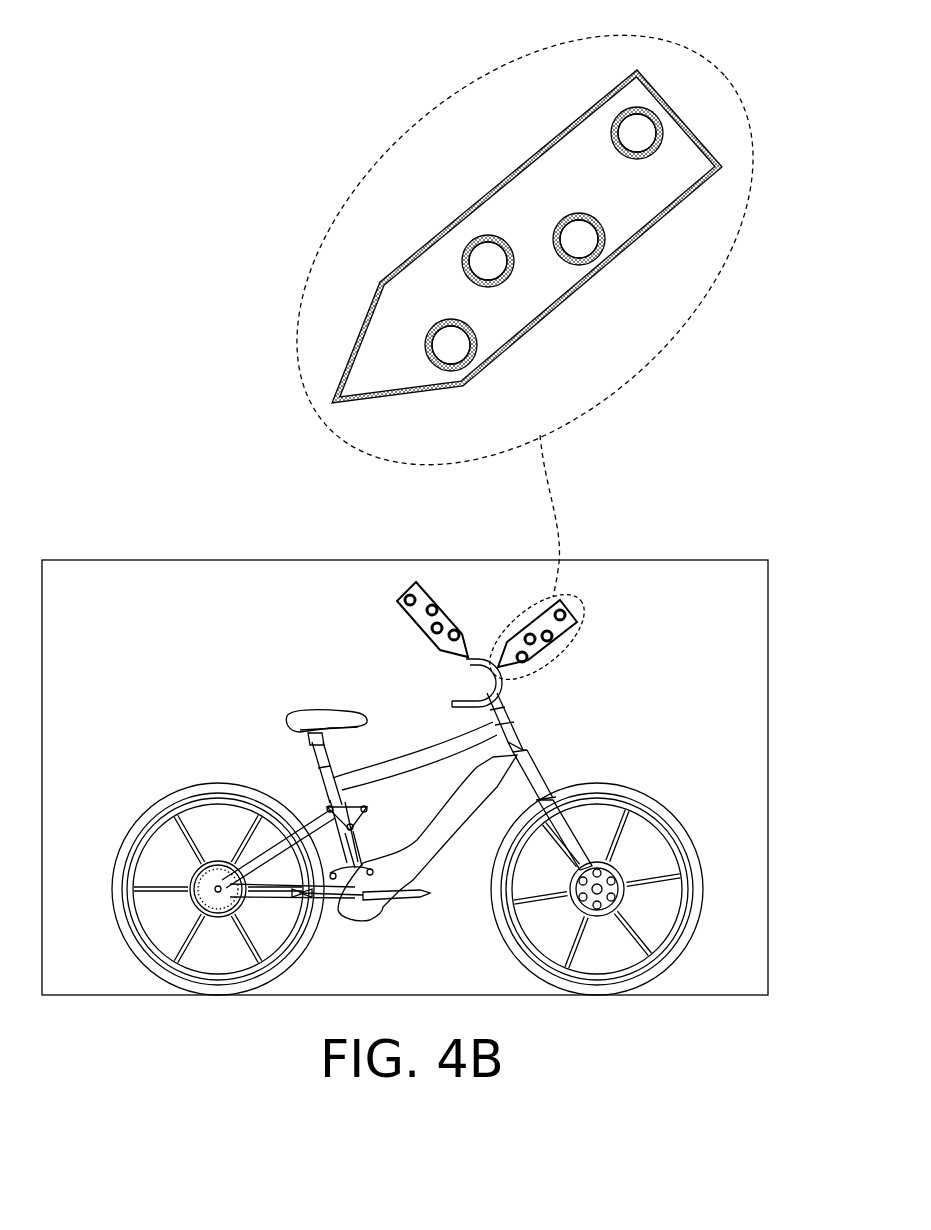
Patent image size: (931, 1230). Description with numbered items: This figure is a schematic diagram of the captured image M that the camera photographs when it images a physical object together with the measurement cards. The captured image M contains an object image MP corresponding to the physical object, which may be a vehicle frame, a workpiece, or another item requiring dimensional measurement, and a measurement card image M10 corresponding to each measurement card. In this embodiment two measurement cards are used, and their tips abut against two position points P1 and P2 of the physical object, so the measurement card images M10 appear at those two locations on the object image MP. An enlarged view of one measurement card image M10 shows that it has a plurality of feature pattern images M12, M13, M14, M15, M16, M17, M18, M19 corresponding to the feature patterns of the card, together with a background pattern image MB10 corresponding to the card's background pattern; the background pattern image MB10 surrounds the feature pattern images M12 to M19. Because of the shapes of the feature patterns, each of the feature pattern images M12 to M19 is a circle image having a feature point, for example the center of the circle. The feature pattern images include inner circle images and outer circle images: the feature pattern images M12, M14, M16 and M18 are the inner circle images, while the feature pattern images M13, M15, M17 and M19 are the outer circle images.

The measurement card image M10 is at (524, 333).
The background pattern image MB10 is at (712, 180).
The feature pattern image M12 is at (466, 383).
The feature pattern image M13 is at (477, 343).
The feature pattern image M14 is at (461, 257).
The feature pattern image M15 is at (476, 238).
The feature pattern image M16 is at (597, 258).
The feature pattern image M17 is at (606, 239).
The feature pattern image M18 is at (656, 114).
The feature pattern image M19 is at (613, 116).
The captured image M is at (683, 559).
The object image MP is at (467, 755).
The position point P1 is at (500, 668).
The position point P2 is at (467, 655).